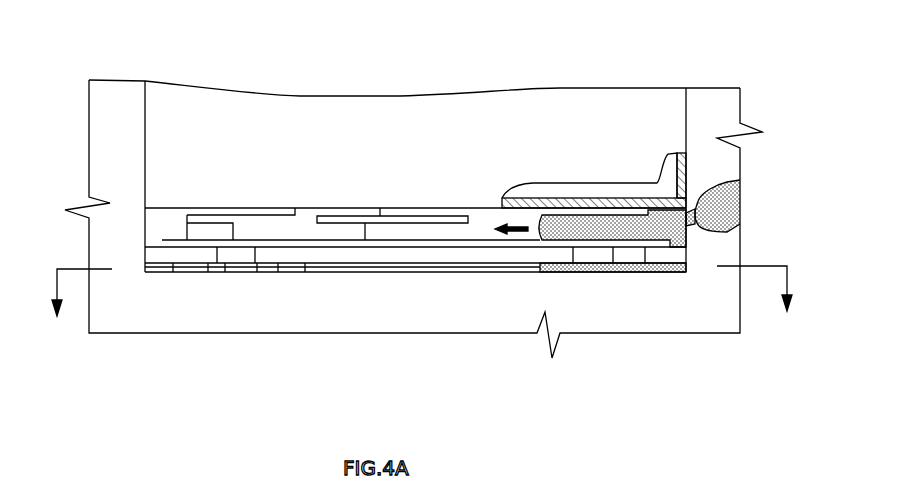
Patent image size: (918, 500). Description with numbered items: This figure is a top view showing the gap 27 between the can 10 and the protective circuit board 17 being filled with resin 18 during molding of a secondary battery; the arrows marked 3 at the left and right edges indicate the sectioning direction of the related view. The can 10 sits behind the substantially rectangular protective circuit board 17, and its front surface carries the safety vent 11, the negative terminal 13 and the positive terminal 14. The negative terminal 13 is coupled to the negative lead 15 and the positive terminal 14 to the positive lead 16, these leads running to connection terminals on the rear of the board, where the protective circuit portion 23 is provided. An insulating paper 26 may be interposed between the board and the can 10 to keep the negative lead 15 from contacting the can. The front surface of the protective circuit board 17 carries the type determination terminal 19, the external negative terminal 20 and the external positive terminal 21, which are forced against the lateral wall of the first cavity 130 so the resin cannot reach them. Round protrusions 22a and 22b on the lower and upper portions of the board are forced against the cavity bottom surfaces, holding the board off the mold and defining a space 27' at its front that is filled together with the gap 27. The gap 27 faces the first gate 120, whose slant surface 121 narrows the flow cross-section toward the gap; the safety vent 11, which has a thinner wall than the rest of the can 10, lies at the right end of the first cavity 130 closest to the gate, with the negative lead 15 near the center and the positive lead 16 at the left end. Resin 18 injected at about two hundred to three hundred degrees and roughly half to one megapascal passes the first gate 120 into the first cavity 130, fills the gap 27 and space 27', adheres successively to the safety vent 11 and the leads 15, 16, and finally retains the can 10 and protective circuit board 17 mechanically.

The section line 3 is at (422, 303).
The can 10 is at (331, 110).
The safety vent 11 is at (636, 187).
The negative terminal 13 is at (413, 210).
The positive terminal 14 is at (203, 210).
The negative lead 15 is at (350, 257).
The positive lead 16 is at (228, 233).
The protective circuit board 17 is at (392, 254).
The resin 18 is at (645, 270).
The type determination terminal 19 is at (301, 268).
The external negative terminal 20 is at (233, 271).
The external positive terminal 21 is at (187, 271).
The round protrusion 22a is at (598, 258).
The round protrusion 22b is at (255, 258).
The protective circuit portion 23 is at (440, 249).
The insulating paper 26 is at (492, 208).
The gap 27 is at (276, 293).
The space 27' is at (510, 340).
The first gate 120 is at (733, 202).
The slant surface 121 is at (693, 230).
The first cavity 130 is at (146, 230).